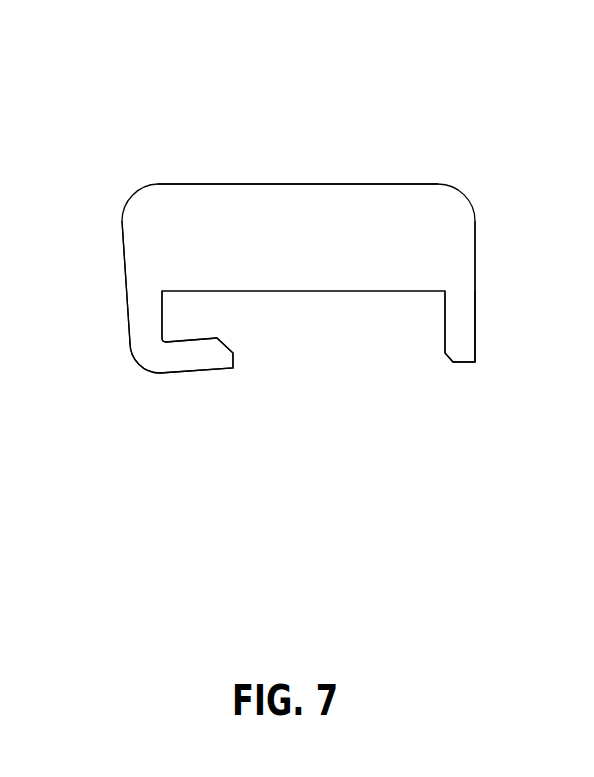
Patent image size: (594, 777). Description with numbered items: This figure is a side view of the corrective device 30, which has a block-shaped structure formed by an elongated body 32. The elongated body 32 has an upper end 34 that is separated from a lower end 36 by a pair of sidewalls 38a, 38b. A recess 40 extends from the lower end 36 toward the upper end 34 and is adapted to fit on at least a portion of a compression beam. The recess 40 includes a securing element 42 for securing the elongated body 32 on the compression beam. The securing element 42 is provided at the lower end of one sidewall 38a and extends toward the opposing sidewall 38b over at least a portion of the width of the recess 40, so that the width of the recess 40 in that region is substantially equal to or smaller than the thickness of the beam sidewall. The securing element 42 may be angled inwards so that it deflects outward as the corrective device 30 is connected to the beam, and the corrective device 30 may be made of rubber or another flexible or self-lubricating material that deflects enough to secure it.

The corrective device 30 is at (349, 127).
The elongated body 32 is at (298, 237).
The upper end 34 is at (220, 183).
The lower end 36 is at (462, 363).
The sidewall 38a is at (122, 273).
The sidewall 38b is at (477, 258).
The recess 40 is at (337, 344).
The securing element 42 is at (188, 360).